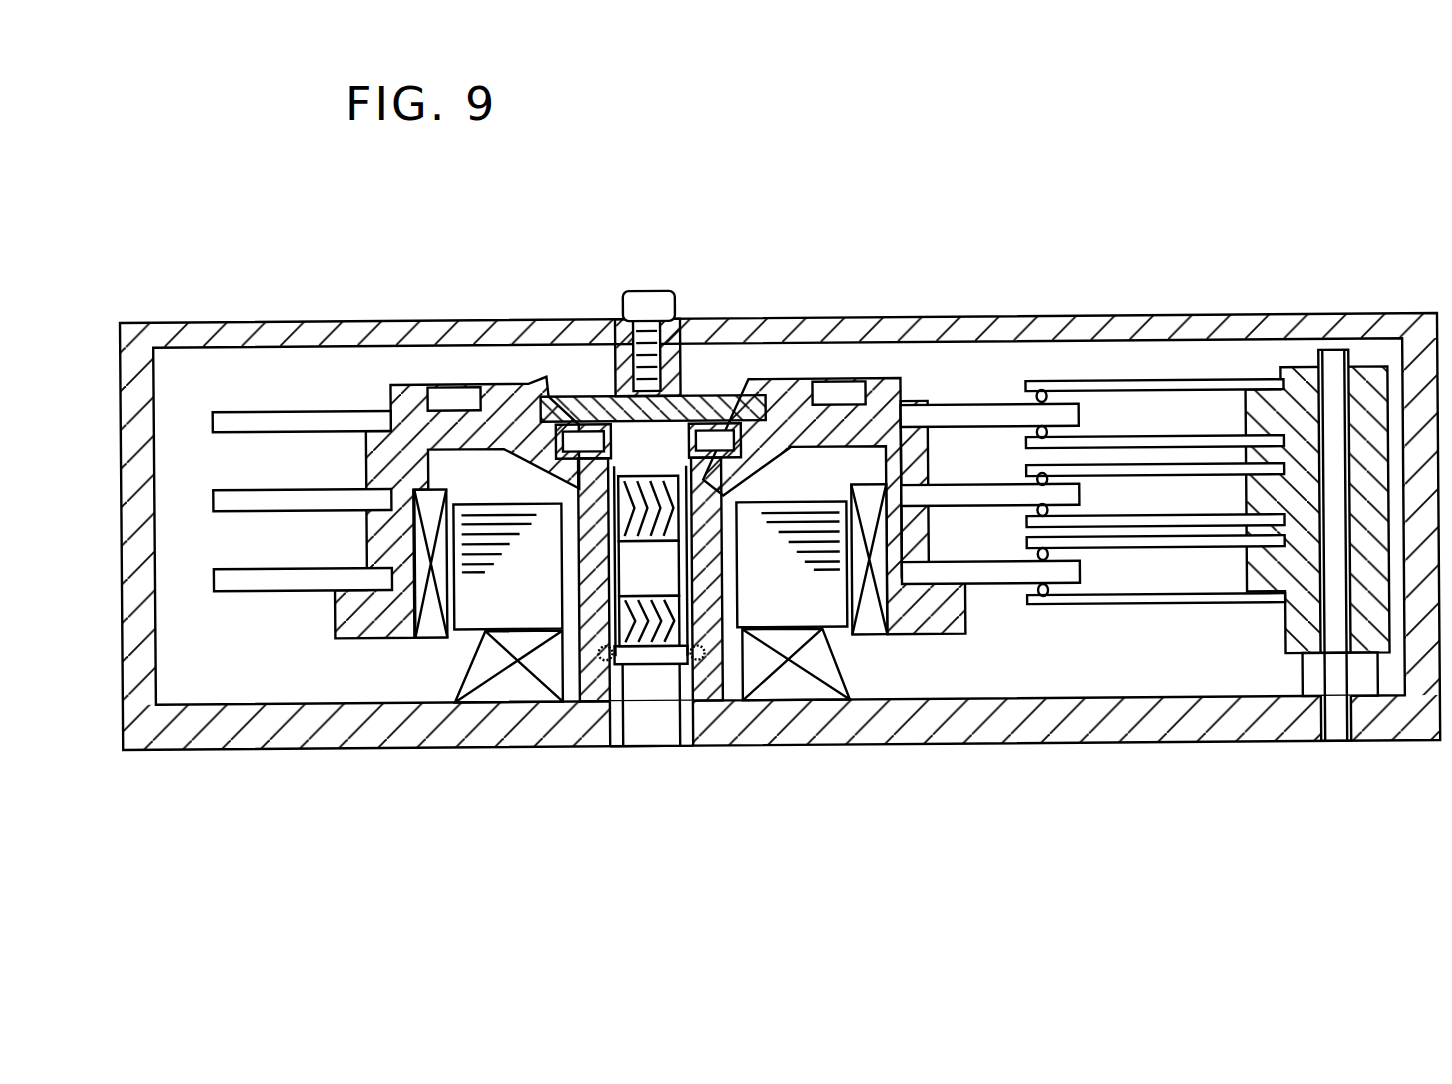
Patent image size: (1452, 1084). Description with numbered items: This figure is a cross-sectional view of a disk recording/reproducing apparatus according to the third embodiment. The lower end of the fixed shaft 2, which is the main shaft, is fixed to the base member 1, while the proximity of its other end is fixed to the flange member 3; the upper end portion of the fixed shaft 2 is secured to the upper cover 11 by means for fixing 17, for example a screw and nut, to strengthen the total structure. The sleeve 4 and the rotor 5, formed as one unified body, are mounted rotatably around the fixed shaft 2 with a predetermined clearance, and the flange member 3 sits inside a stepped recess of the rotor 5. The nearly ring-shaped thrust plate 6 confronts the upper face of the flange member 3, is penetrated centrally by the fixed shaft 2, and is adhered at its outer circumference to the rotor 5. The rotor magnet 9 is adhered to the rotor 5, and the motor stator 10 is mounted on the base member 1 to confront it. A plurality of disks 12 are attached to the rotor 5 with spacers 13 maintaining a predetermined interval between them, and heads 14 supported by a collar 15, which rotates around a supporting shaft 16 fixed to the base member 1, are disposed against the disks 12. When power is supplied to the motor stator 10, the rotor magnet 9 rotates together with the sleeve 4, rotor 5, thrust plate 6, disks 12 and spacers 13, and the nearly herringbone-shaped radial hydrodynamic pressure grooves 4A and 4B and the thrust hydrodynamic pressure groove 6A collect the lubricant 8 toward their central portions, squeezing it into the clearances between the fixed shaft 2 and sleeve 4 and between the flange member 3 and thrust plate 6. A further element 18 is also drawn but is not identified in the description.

The base member 1 is at (305, 733).
The fixed shaft 2 is at (647, 707).
The flange member 3 is at (713, 408).
The sleeve 4 is at (782, 410).
The radial hydrodynamic pressure groove 4A is at (718, 516).
The radial hydrodynamic pressure groove 4B is at (668, 662).
The rotor 5 is at (896, 408).
The thrust plate 6 is at (578, 404).
The thrust hydrodynamic pressure groove 6A is at (567, 404).
The lubricant 8 is at (580, 590).
The rotor magnet 9 is at (870, 592).
The motor stator 10 is at (805, 600).
The upper cover 11 is at (1192, 338).
The disks 12 is at (1080, 415).
The spacers 13 is at (375, 545).
The heads 14 is at (1042, 398).
The collar 15 is at (1368, 385).
The supporting shaft 16 is at (1337, 686).
The means for fixing 17 is at (653, 293).
The motor bracket 18 is at (397, 553).